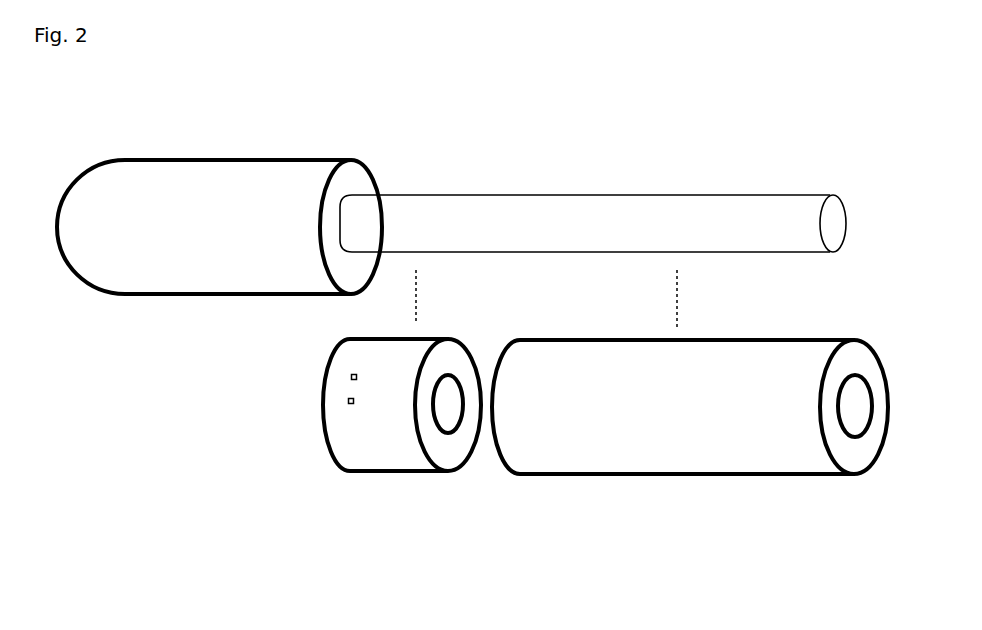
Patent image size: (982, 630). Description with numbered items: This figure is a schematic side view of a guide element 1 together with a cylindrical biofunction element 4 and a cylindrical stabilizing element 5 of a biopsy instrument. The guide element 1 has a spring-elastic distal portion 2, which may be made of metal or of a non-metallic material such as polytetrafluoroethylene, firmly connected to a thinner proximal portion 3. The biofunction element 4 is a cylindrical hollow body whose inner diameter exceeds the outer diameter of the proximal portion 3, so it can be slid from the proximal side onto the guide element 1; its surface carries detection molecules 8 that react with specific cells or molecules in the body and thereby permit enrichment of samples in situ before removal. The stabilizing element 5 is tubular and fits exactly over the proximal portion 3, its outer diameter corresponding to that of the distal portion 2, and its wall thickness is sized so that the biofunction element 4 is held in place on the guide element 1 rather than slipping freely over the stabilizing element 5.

The guide element 1 is at (584, 147).
The distal portion 2 is at (327, 147).
The proximal portion 3 is at (800, 183).
The biofunction element 4 is at (310, 416).
The stabilizing element 5 is at (527, 488).
The detection molecules 8 is at (342, 398).